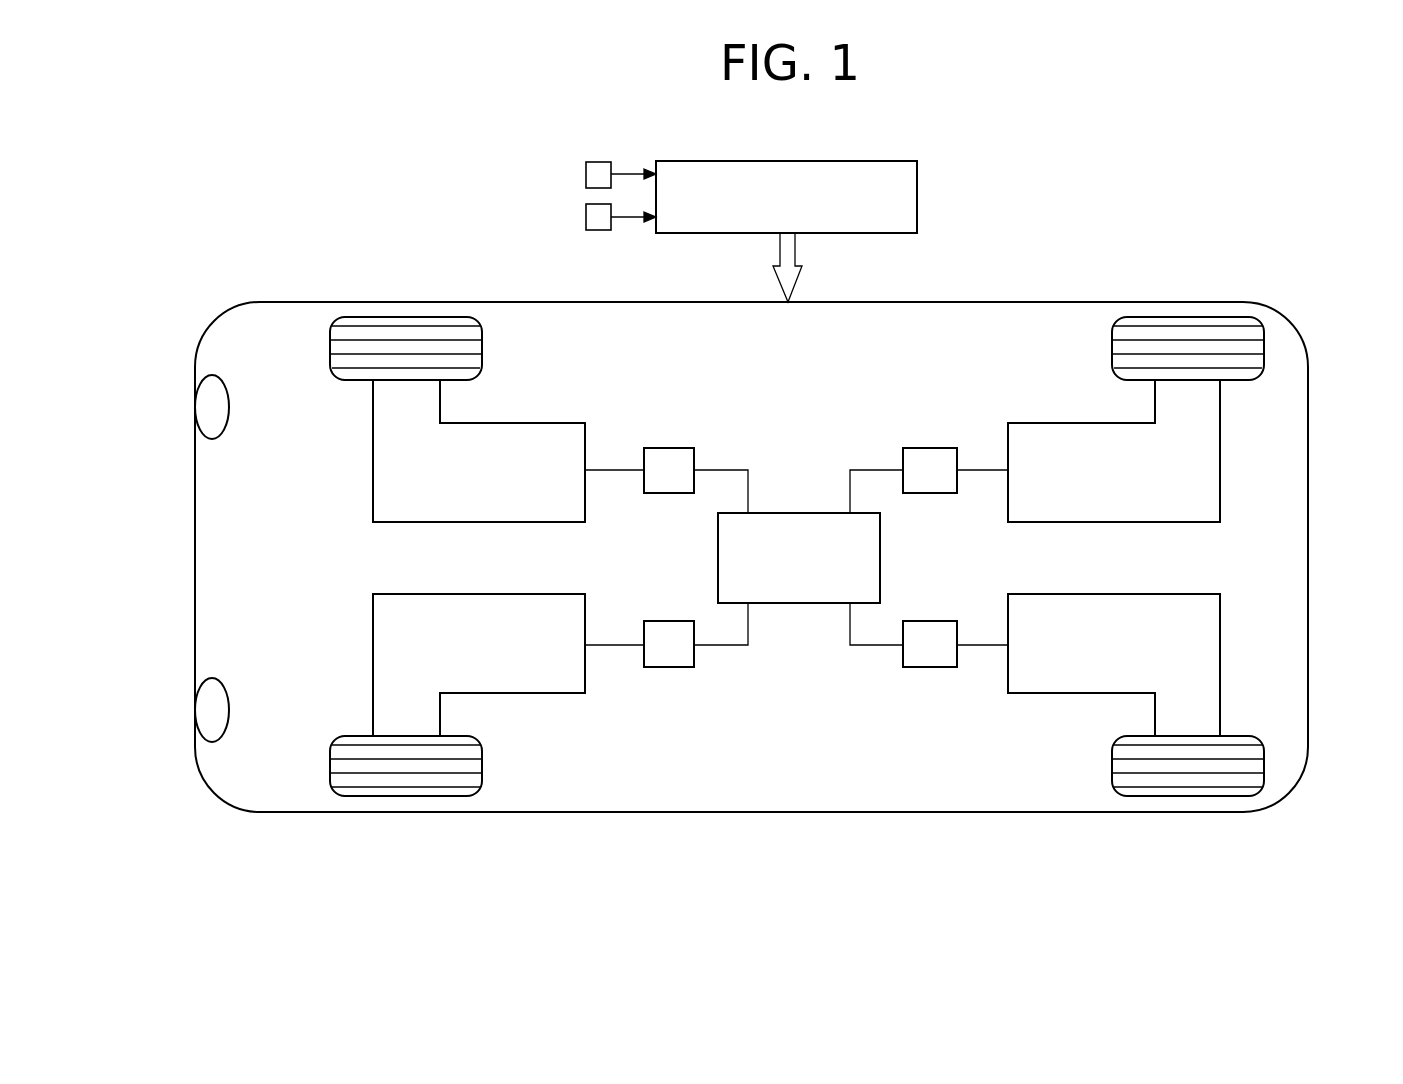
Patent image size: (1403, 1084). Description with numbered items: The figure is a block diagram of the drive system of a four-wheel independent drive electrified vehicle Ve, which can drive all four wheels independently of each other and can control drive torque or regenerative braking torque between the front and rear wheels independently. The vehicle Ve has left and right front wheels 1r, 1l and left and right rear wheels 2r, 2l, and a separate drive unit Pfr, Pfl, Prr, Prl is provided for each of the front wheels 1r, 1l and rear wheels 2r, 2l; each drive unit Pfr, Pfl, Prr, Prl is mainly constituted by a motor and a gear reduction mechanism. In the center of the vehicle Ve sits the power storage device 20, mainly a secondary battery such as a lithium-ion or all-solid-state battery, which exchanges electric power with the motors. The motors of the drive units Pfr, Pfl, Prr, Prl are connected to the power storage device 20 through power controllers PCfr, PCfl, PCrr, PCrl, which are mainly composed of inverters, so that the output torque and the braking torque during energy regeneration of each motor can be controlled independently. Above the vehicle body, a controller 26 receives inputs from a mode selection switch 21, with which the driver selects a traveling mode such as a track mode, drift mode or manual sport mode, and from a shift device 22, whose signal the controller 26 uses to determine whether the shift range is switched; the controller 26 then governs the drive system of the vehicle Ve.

The electrified vehicle Ve is at (731, 876).
The controller 26 is at (797, 160).
The mode selection switch 21 is at (586, 175).
The shift device 22 is at (586, 217).
The front wheel 1r is at (410, 317).
The front wheel 1l is at (407, 796).
The rear wheel 2r is at (1187, 317).
The rear wheel 2l is at (1191, 796).
The drive unit Pfr is at (466, 486).
The drive unit Pfl is at (468, 663).
The drive unit Prr is at (1074, 488).
The drive unit Prl is at (1077, 662).
The power controller PCfr is at (678, 448).
The power controller PCfl is at (665, 667).
The power controller PCrr is at (933, 448).
The power controller PCrl is at (928, 667).
The power storage device 20 is at (880, 551).